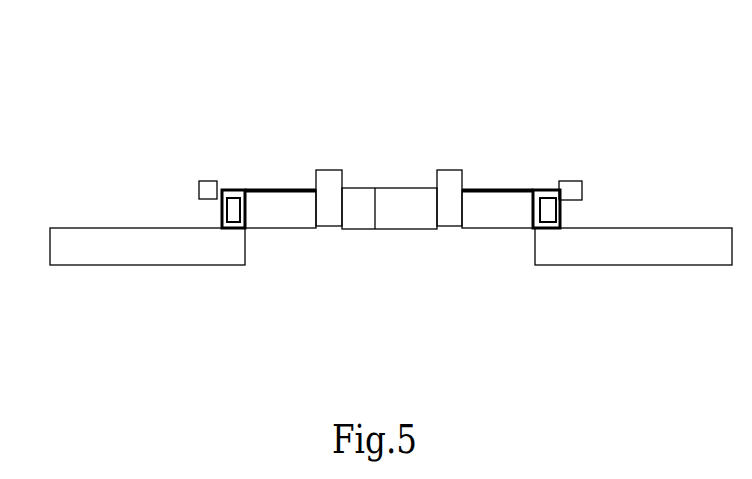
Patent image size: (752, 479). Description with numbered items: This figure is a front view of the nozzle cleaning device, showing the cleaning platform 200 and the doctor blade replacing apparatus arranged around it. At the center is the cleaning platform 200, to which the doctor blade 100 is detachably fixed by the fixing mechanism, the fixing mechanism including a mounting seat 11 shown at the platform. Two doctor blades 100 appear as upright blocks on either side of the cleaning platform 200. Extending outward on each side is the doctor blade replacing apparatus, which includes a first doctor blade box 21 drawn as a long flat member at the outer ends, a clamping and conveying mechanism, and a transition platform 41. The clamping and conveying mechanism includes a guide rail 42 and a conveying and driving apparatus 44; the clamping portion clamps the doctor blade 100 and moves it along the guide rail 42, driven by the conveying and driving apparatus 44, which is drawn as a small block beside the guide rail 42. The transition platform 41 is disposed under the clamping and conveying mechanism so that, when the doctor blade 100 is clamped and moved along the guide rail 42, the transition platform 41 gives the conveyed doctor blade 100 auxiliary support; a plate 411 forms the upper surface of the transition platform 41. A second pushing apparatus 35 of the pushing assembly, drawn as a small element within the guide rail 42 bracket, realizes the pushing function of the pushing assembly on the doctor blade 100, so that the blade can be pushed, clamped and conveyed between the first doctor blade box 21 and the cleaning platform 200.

The first doctor blade box 21 is at (85, 252).
The guide rail 42 is at (247, 188).
The second pushing apparatus 35 is at (232, 209).
The conveying and driving apparatus 44 is at (200, 187).
The transition platform 41 is at (281, 231).
The support plate 411 is at (263, 216).
The mounting seat 11 is at (360, 203).
The cleaning platform 200 is at (388, 198).
The doctor blade 100 is at (325, 187).